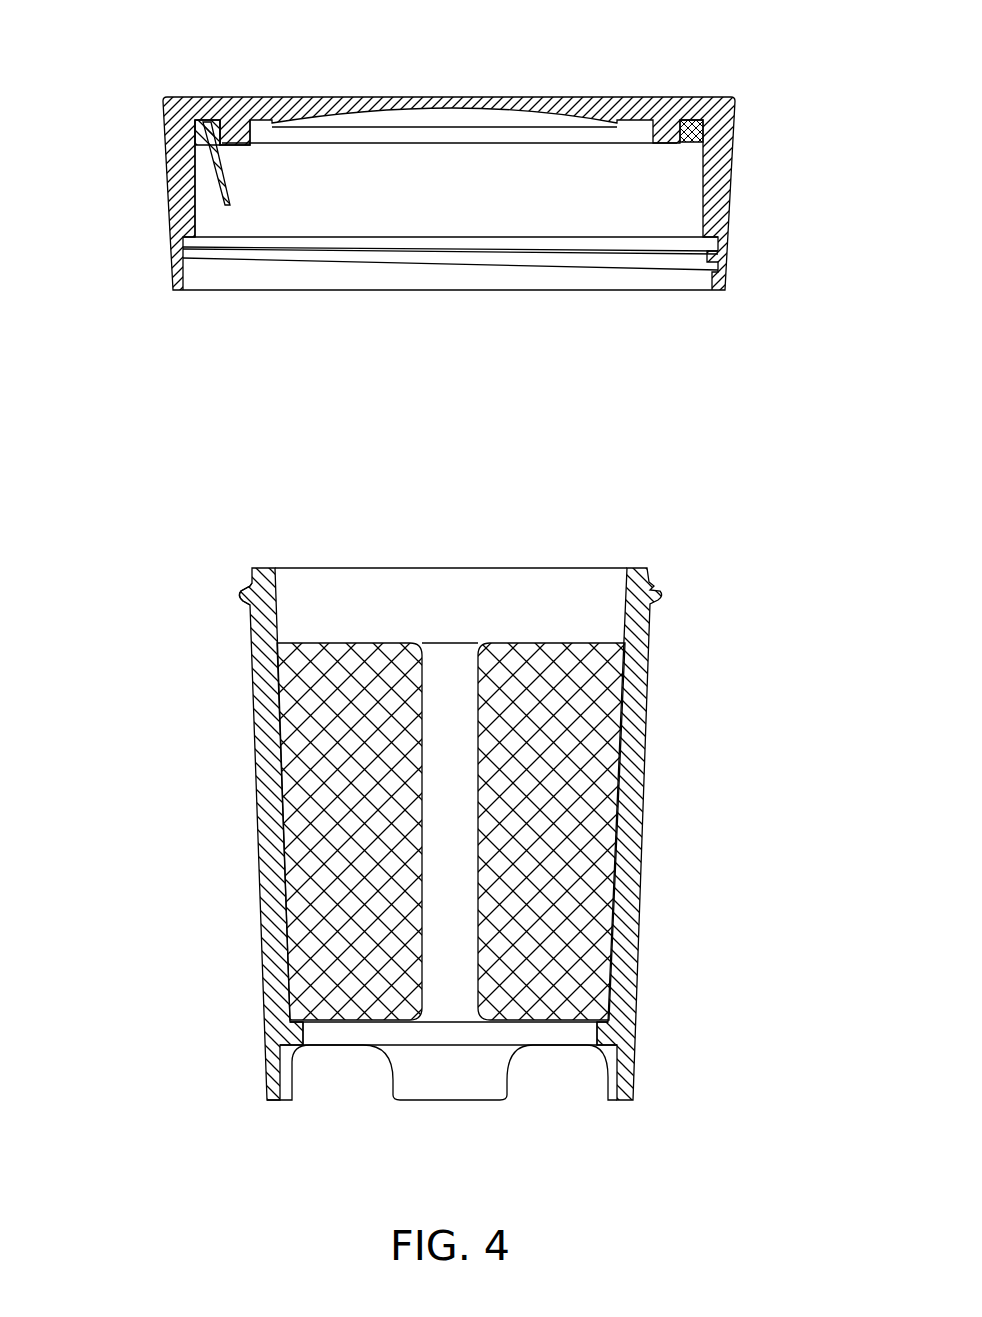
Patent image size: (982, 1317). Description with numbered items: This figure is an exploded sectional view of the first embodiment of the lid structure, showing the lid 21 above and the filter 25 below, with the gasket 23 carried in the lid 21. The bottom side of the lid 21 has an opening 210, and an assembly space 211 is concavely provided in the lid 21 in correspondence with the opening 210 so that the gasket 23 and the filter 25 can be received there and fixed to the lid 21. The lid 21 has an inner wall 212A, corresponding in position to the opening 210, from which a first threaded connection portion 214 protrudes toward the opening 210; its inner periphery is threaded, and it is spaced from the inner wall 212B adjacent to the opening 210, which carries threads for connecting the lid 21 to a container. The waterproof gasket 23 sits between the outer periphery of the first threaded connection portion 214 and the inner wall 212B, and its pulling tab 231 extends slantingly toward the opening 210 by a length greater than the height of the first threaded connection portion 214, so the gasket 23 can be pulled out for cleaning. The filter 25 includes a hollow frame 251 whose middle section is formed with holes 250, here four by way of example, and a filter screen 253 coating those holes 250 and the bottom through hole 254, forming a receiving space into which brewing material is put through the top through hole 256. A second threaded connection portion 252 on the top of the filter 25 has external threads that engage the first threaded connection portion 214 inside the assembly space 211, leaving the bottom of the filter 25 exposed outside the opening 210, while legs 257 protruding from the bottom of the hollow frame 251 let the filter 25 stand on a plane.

The lid 21 is at (729, 101).
The opening 210 is at (563, 292).
The assembly space 211 is at (670, 197).
The inner wall 212A is at (448, 97).
The inner wall 212B is at (196, 150).
The first threaded connection portion 214 is at (236, 124).
The gasket 23 is at (205, 97).
The pulling tab 231 is at (226, 172).
The filter 25 is at (513, 834).
The hole 250 is at (535, 637).
The hollow frame 251 is at (640, 746).
The second threaded connection portion 252 is at (247, 580).
The filter screen 253 is at (580, 849).
The bottom through hole 254 is at (568, 1046).
The top through hole 256 is at (512, 568).
The legs 257 is at (636, 1076).